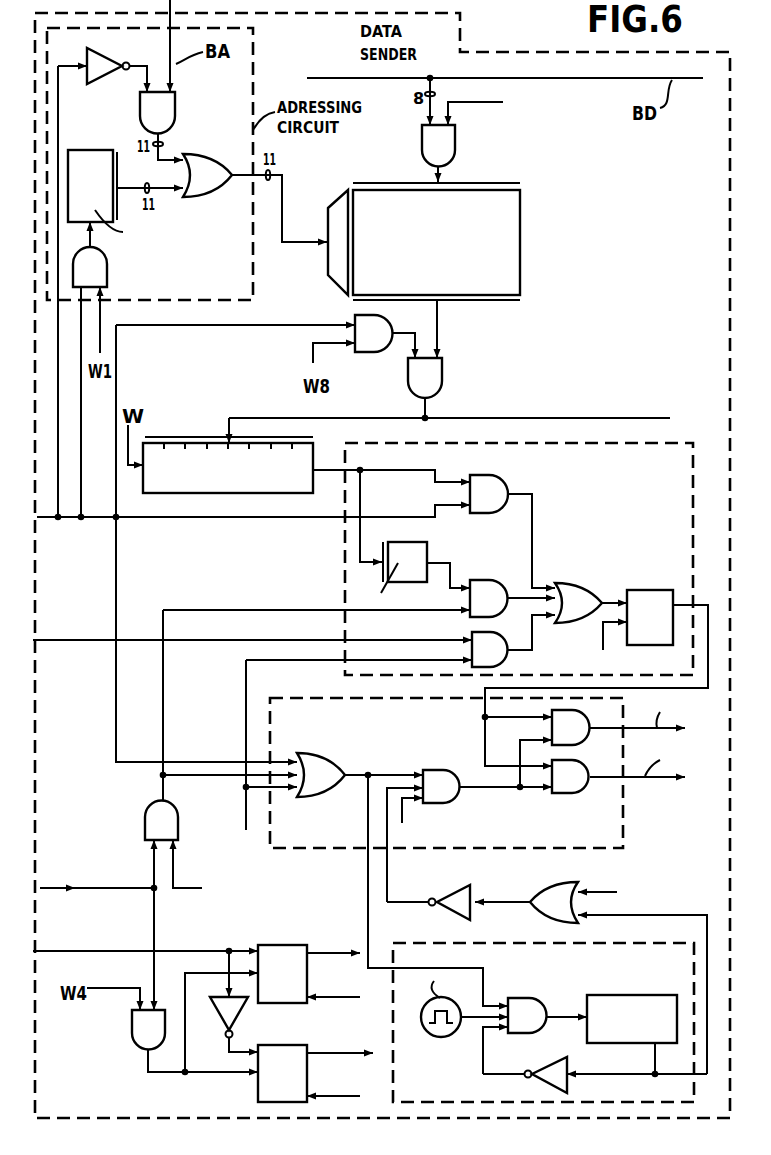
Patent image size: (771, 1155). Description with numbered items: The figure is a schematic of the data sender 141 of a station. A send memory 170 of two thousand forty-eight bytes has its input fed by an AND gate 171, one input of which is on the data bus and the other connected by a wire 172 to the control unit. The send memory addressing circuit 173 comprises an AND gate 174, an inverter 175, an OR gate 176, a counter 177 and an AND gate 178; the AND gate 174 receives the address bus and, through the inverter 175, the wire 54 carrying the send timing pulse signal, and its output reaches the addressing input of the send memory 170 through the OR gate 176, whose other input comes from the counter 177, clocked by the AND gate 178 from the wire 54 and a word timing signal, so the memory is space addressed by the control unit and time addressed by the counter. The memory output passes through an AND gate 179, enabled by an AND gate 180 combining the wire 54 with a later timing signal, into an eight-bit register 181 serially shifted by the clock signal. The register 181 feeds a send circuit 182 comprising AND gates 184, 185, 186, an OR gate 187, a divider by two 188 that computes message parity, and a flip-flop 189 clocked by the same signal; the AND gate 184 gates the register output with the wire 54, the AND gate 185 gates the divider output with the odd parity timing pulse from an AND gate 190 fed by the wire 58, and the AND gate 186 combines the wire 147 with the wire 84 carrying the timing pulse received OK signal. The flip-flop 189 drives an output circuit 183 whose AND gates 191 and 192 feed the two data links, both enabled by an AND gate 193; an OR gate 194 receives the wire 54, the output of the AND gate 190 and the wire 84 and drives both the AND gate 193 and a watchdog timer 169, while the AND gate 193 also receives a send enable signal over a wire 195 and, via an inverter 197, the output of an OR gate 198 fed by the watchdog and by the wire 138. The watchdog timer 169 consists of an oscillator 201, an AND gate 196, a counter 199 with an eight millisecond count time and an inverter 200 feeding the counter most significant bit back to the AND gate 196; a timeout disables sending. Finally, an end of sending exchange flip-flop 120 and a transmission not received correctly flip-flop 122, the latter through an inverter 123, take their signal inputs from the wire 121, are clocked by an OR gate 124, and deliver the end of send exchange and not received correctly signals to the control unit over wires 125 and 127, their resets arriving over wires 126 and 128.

The data sender 141 is at (460, 52).
The send memory addressing circuit 173 is at (245, 76).
The inverter 175 is at (104, 51).
The AND gate 174 is at (167, 119).
The counter 177 is at (90, 158).
The OR gate 176 is at (207, 178).
The AND gate 178 is at (100, 270).
The AND gate 171 is at (432, 138).
The wire 172 is at (501, 104).
The send memory 170 is at (520, 268).
The AND gate 180 is at (375, 340).
The AND gate 179 is at (445, 380).
The 8-bit register 181 is at (193, 437).
The send circuit 182 is at (340, 590).
The AND gate 184 is at (495, 486).
The AND gate 185 is at (497, 593).
The AND gate 186 is at (492, 655).
The OR gate 187 is at (580, 595).
The divider by two 188 is at (415, 551).
The flip-flop 189 is at (651, 592).
The output circuit 183 is at (313, 707).
The OR gate 194 is at (328, 761).
The AND gate 193 is at (441, 773).
The wire 195 is at (404, 820).
The AND gate 191 is at (578, 740).
The AND gate 192 is at (576, 790).
The AND gate 190 is at (152, 822).
The wire 84 is at (246, 822).
The wire 58 is at (58, 888).
The wire 147 is at (65, 638).
The wire 54 is at (47, 515).
The wire 121 is at (73, 951).
The end of sending exchange flip-flop 120 is at (276, 945).
The inverter 123 is at (240, 1020).
The OR gate 124 is at (145, 1053).
The transmission not received correctly in send mode flip-flop 122 is at (258, 1085).
The wire 125 is at (318, 950).
The wire 126 is at (336, 998).
The wire 127 is at (328, 1052).
The wire 128 is at (348, 1095).
The watchdog timer 169 is at (428, 943).
The inverter 197 is at (456, 895).
The OR gate 198 is at (546, 895).
The wire 138 is at (615, 892).
The AND gate 196 is at (541, 1003).
The counter 199 is at (628, 995).
The inverter 200 is at (541, 1062).
The oscillator 201 is at (447, 1038).